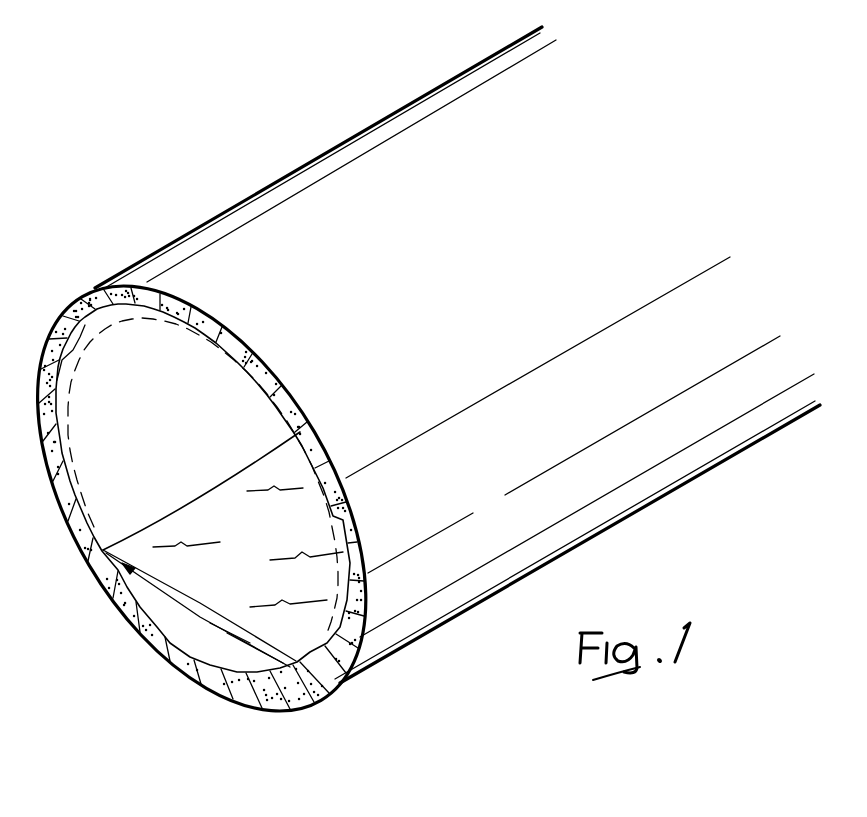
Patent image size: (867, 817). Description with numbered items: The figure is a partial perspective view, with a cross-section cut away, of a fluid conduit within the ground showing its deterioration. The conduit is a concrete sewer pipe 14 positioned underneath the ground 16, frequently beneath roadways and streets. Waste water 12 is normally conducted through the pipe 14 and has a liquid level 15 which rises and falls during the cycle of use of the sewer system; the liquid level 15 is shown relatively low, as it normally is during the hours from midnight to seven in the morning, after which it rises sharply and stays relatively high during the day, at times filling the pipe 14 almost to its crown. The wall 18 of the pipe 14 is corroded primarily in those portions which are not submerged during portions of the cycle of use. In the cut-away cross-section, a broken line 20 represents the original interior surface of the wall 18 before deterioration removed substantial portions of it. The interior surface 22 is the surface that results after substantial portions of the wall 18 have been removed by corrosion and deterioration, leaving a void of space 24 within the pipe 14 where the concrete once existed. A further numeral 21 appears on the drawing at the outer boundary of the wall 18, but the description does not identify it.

The waste water 12 is at (252, 573).
The concrete sewer pipe 14 is at (252, 172).
The liquid level 15 is at (234, 474).
The ground 16 is at (421, 69).
The wall 18 is at (106, 587).
The broken line 20 is at (258, 392).
The outer wall surface 21 is at (87, 298).
The interior surface 22 is at (62, 452).
The void of space 24 is at (60, 364).